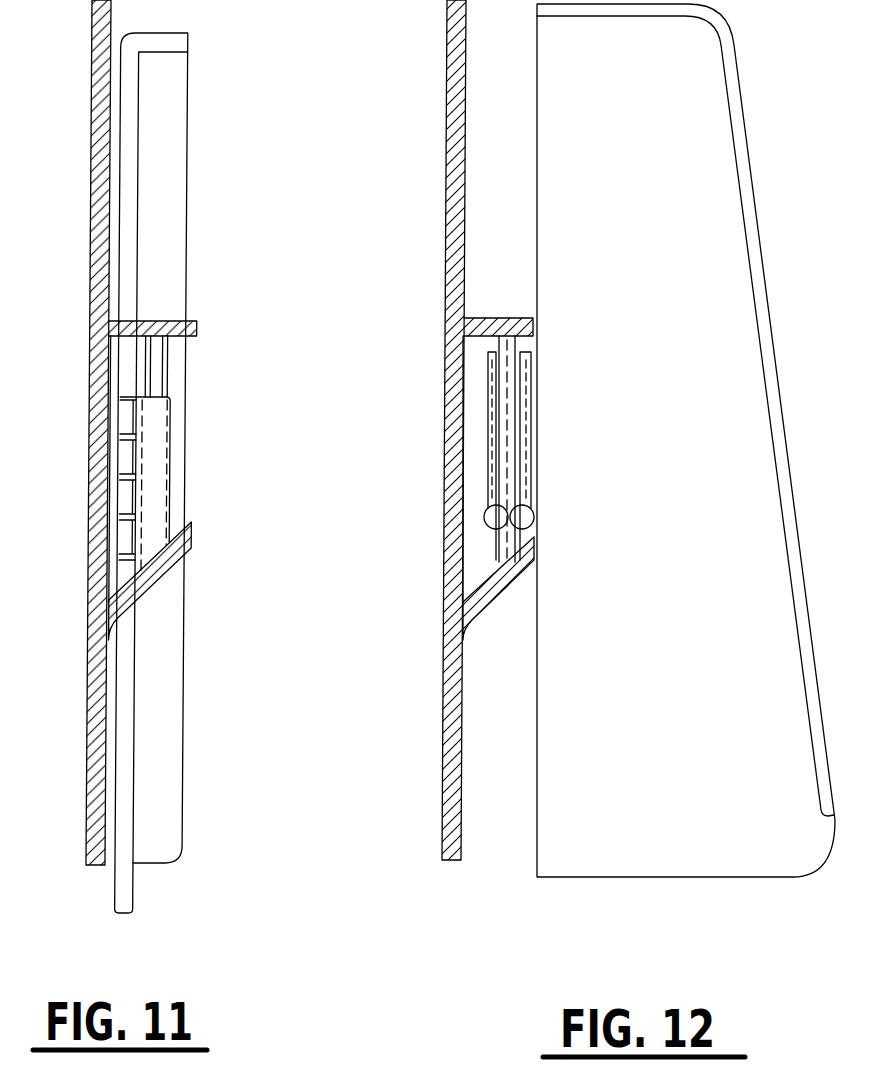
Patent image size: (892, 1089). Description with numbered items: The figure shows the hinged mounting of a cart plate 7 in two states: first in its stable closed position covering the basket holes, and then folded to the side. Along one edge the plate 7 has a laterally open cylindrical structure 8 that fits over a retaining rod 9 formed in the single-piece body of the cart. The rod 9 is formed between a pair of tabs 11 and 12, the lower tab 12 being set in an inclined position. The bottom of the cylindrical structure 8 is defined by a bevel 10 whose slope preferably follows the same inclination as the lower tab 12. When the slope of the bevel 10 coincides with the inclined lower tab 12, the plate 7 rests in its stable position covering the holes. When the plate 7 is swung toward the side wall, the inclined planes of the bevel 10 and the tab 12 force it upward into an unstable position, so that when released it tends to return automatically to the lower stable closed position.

In FIG. 11, the plate 7 is at (130, 184).
In FIG. 12, the plate 7 is at (673, 157).
In FIG. 11, the cylindrical structure 8 is at (148, 487).
In FIG. 12, the cylindrical structure 8 is at (493, 382).
In FIG. 11, the retaining rod 9 is at (150, 372).
In FIG. 12, the retaining rod 9 is at (500, 547).
In FIG. 12, the bevel 10 is at (494, 515).
In FIG. 11, the tab 11 is at (199, 321).
In FIG. 12, the tab 11 is at (500, 325).
In FIG. 11, the lower tab 12 is at (140, 585).
In FIG. 12, the lower tab 12 is at (487, 595).